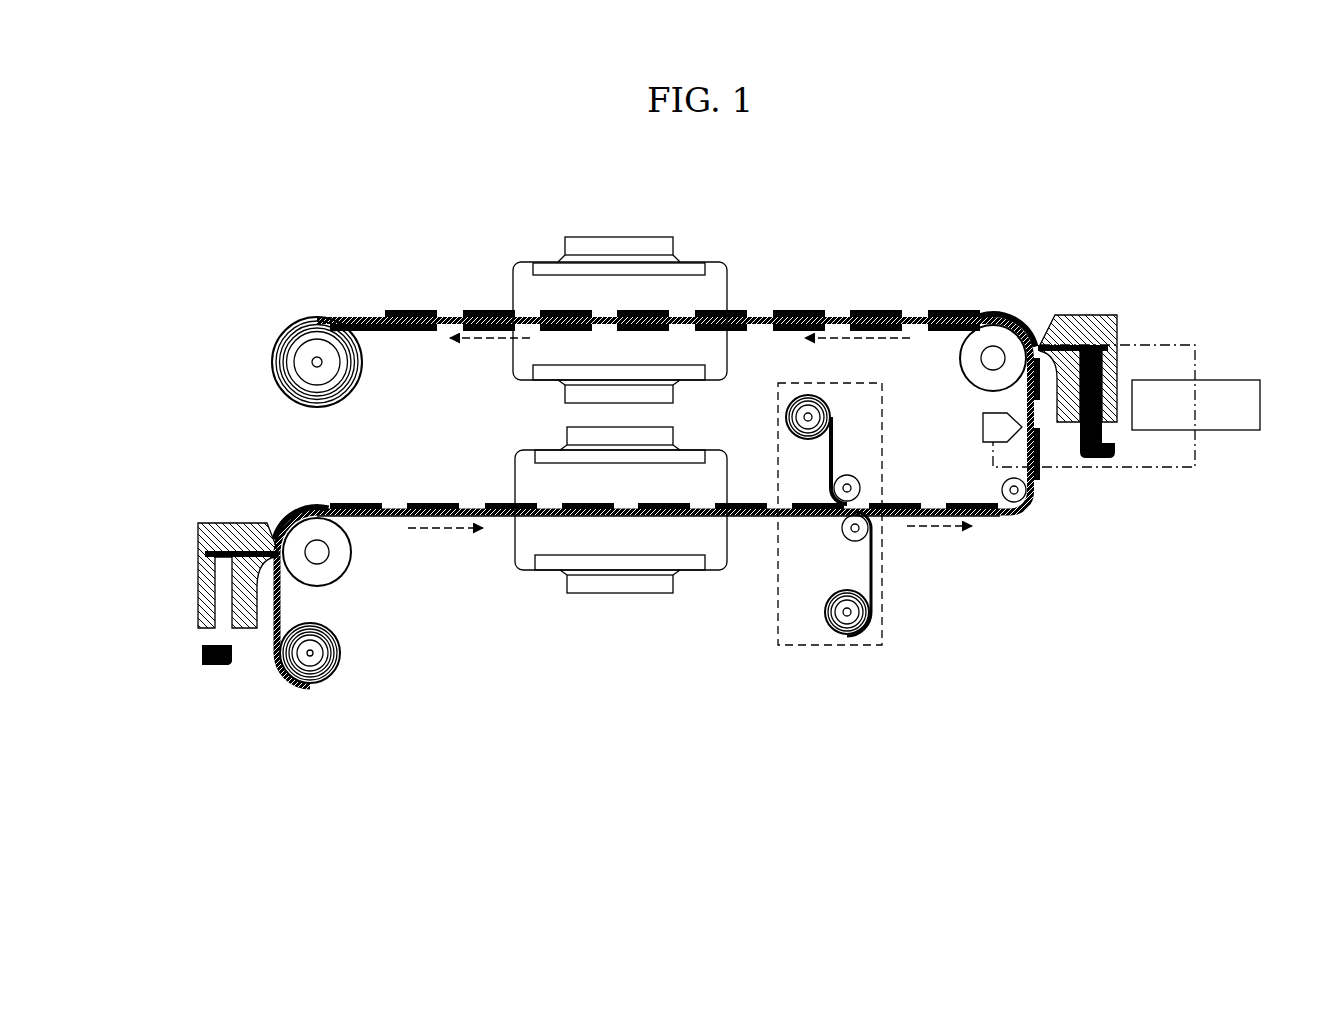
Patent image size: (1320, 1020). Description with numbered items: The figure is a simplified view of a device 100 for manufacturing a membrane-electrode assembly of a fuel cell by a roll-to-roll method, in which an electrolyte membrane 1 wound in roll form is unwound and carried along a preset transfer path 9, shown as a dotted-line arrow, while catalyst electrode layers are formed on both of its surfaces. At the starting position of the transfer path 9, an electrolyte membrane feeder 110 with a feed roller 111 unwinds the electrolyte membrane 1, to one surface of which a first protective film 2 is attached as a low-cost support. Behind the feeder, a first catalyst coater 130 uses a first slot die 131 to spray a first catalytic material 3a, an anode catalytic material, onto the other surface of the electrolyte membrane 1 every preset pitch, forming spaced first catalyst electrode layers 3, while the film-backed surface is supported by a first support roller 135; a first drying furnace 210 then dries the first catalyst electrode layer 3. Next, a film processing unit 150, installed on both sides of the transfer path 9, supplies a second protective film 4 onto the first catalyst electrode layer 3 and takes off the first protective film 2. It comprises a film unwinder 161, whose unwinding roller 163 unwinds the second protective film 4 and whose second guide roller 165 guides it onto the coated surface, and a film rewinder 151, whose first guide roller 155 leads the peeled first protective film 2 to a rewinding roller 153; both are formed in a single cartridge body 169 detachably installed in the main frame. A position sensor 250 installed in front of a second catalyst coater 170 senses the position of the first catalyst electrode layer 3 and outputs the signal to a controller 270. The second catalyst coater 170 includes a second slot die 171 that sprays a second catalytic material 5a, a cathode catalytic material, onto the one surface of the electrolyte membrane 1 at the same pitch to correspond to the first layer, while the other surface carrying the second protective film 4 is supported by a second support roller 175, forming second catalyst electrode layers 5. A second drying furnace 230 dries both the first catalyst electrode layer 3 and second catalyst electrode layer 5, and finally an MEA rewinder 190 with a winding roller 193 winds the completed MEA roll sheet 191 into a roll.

The device 100 is at (727, 178).
The electrolyte membrane 1 is at (440, 325).
The first protective film 2 is at (870, 570).
The first catalyst electrode layer 3 is at (388, 310).
The first catalytic material 3a is at (205, 650).
The second protective film 4 is at (450, 330).
The second catalyst electrode layer 5 is at (412, 317).
The second catalytic material 5a is at (1100, 458).
The transfer path 9 is at (466, 343).
The electrolyte membrane feeder 110 is at (281, 687).
The feed roller 111 is at (312, 668).
The first catalyst coater 130 is at (212, 555).
The first slot die 131 is at (200, 545).
The first support roller 135 is at (335, 553).
The film processing unit 150 is at (872, 570).
The film rewinder 151 is at (882, 618).
The rewinding roller 153 is at (856, 620).
The first guide roller 155 is at (869, 531).
The film unwinder 161 is at (833, 557).
The unwinding roller 163 is at (800, 417).
The second guide roller 165 is at (861, 486).
The cartridge body 169 is at (884, 628).
The second catalyst coater 170 is at (1091, 376).
The second slot die 171 is at (1077, 320).
The second support roller 175 is at (993, 336).
The MEA rewinder 190 is at (273, 356).
The MEA roll sheet 191 is at (395, 334).
The winding roller 193 is at (302, 368).
The first drying furnace 210 is at (612, 598).
The second drying furnace 230 is at (598, 234).
The position sensor 250 is at (983, 430).
The controller 270 is at (1227, 380).